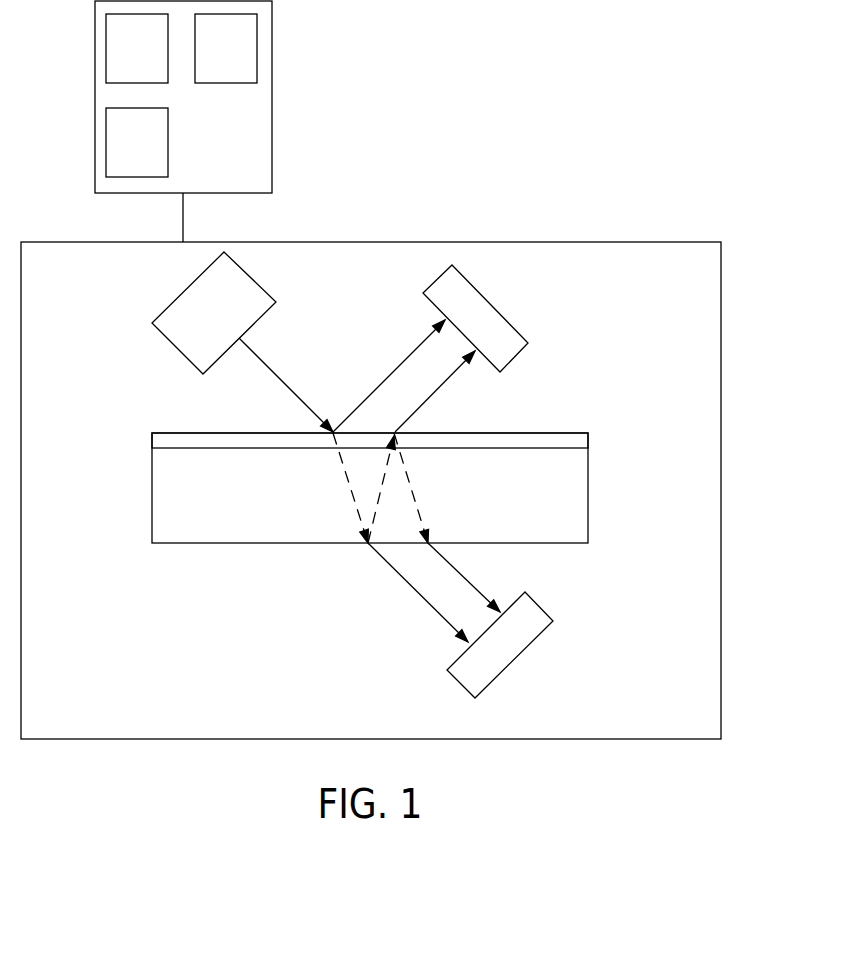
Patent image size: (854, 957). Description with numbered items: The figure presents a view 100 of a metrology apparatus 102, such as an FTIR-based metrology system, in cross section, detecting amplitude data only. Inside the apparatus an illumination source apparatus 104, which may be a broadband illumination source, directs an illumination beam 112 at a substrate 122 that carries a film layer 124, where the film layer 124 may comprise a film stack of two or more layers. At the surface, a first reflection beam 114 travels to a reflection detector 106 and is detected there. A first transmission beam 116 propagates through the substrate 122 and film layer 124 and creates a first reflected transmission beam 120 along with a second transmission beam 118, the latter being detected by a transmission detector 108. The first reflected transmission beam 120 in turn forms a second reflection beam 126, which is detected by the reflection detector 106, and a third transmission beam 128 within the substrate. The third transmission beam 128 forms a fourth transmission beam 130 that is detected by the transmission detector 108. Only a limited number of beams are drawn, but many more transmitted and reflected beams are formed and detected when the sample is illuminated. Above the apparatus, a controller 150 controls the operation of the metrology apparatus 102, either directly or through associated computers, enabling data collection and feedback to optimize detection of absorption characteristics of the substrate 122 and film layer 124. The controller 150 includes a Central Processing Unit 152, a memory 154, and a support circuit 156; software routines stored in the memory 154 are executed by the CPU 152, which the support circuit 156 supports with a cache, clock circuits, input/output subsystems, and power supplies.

The view 100 is at (662, 172).
The metrology apparatus 102 is at (47, 718).
The illumination source apparatus 104 is at (193, 319).
The reflection detector 106 is at (493, 303).
The transmission detector 108 is at (540, 602).
The illumination beam 112 is at (280, 377).
The first reflection beam 114 is at (420, 340).
The first transmission beam 116 is at (353, 495).
The second transmission beam 118 is at (410, 590).
The first reflected transmission beam 120 is at (382, 488).
The substrate 122 is at (177, 519).
The film layer 124 is at (152, 435).
The second reflection beam 126 is at (438, 385).
The third transmission beam 128 is at (419, 510).
The fourth transmission beam 130 is at (470, 580).
The controller 150 is at (206, 154).
The Central Processing Unit (CPU) 152 is at (119, 61).
The memory 154 is at (206, 61).
The support circuit 156 is at (119, 154).